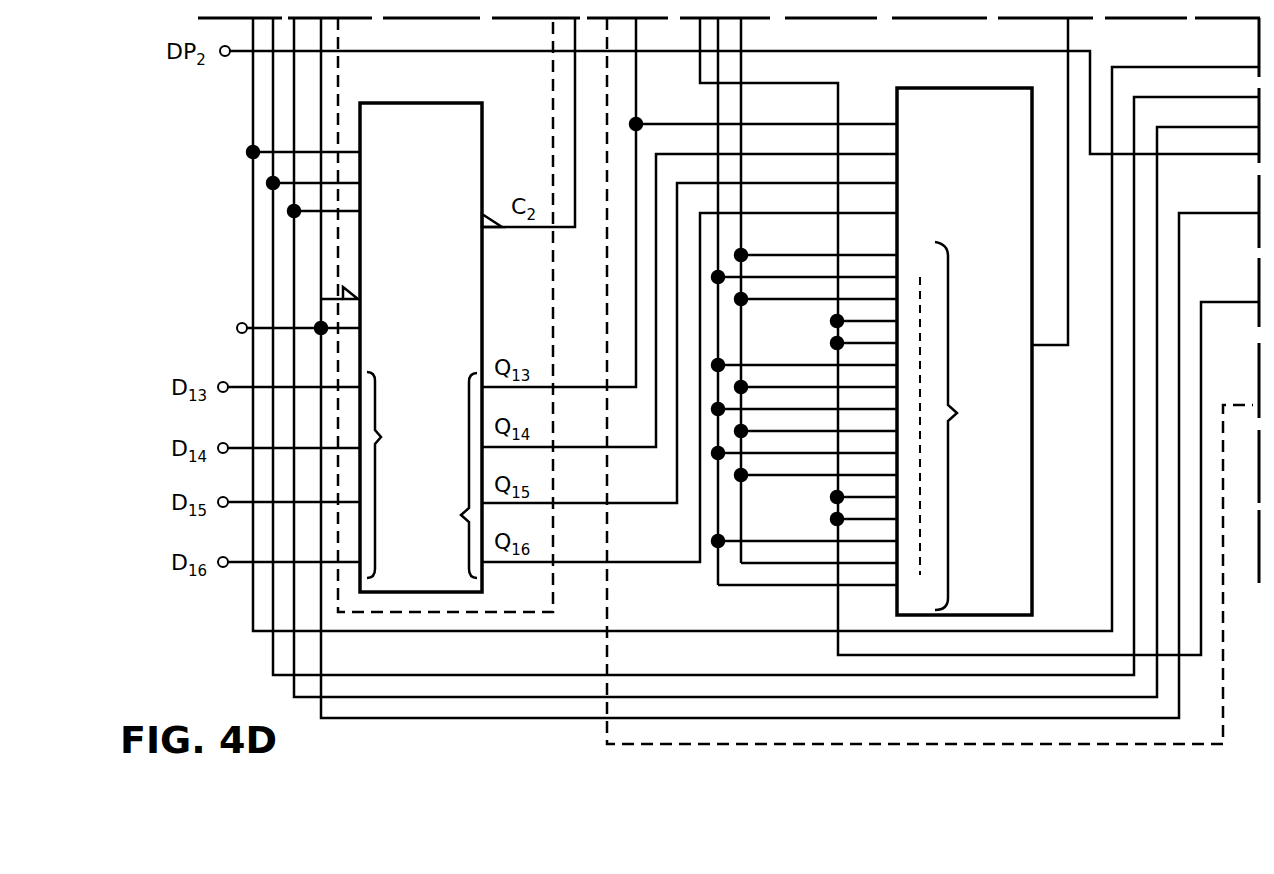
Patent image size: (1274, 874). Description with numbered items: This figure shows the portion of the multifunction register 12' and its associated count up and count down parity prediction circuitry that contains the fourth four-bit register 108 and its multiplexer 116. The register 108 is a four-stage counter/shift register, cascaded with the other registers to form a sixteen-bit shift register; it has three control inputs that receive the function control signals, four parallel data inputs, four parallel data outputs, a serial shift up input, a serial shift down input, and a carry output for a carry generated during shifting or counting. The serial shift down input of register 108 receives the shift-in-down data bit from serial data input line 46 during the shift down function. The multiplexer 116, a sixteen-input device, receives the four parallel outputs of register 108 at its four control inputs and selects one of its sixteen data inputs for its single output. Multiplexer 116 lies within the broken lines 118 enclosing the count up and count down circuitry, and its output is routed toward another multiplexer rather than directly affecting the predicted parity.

The multifunction register 12' is at (446, 315).
The serial data input line 46 is at (263, 328).
The 4-bit register 108 is at (482, 157).
The multiplexer 116 is at (1023, 490).
The broken lines 118 is at (608, 93).